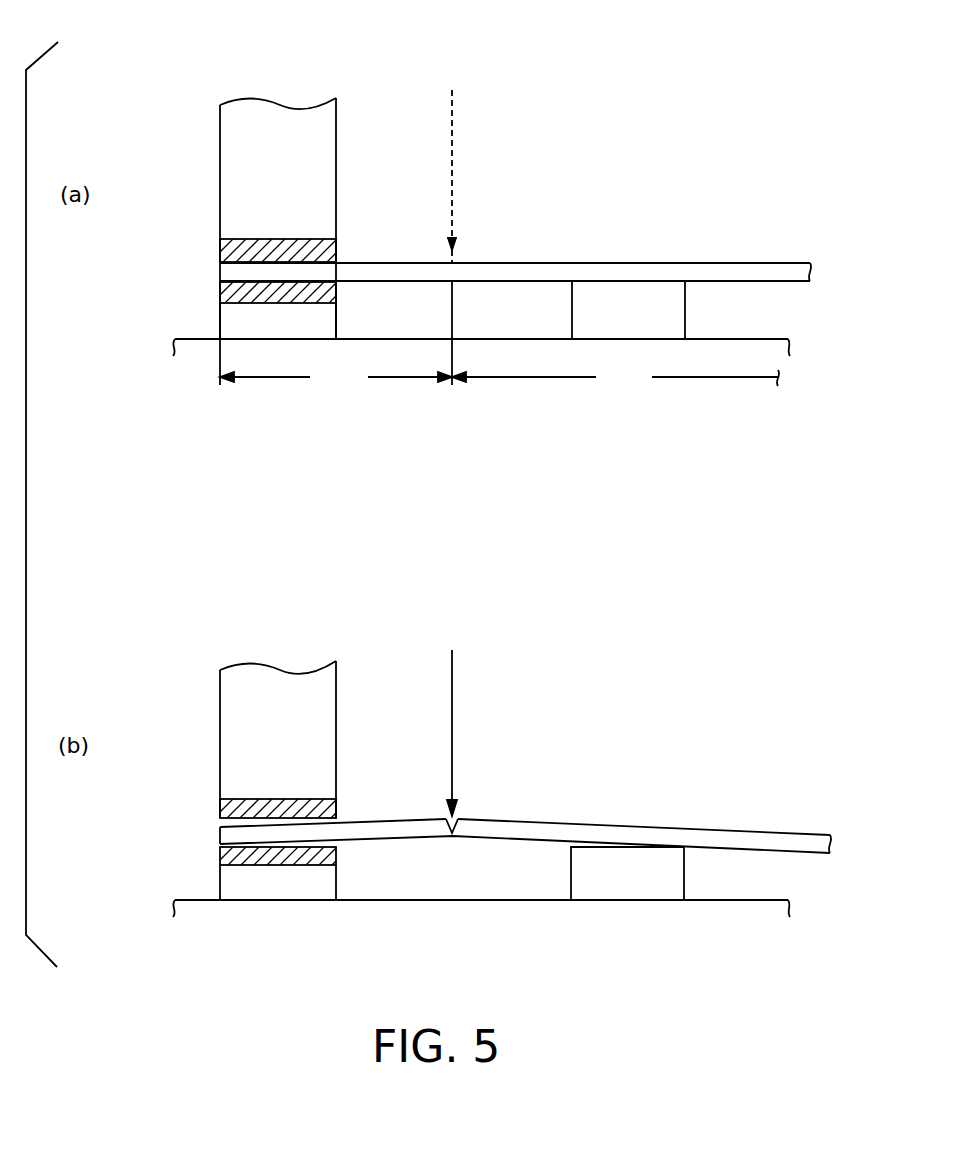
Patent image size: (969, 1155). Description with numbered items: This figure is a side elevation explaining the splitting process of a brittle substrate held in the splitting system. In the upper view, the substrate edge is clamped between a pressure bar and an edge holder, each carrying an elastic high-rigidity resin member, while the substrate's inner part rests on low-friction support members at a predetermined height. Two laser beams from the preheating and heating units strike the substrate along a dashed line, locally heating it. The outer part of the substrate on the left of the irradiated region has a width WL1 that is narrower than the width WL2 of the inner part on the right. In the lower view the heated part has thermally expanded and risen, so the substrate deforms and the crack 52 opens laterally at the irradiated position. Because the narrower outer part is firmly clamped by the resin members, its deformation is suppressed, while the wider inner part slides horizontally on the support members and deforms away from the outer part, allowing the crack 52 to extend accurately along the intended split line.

The crack 52 is at (455, 816).
The width of outer part WL1 is at (336, 364).
The width of inner part WL2 is at (615, 378).